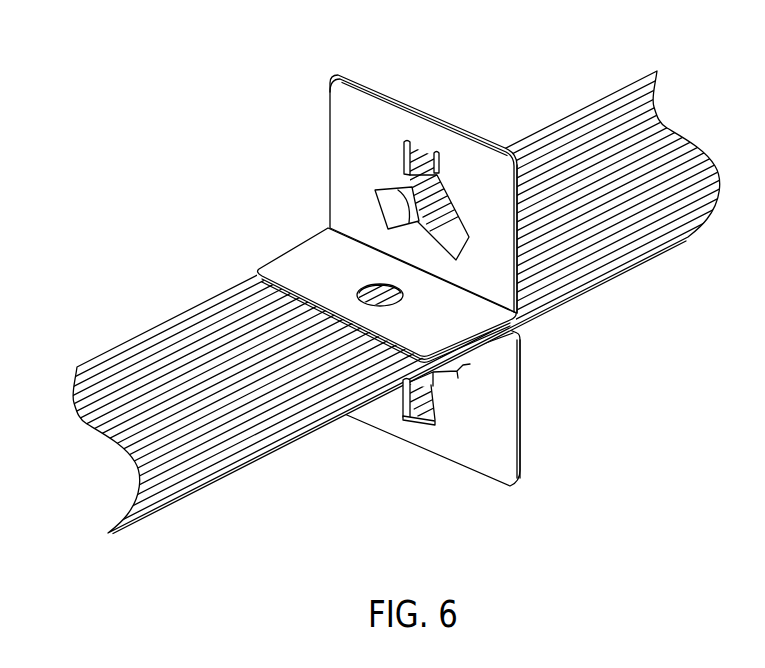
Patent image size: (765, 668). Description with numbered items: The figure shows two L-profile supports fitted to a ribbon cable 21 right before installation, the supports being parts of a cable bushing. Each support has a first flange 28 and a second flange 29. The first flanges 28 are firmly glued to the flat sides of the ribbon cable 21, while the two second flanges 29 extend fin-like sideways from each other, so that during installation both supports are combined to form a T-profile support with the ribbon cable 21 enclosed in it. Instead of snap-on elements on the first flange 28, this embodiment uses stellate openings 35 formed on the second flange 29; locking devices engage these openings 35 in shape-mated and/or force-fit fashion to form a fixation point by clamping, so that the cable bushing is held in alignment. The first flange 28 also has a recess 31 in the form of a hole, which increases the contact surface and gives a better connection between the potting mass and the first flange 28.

The ribbon cable 21 is at (133, 367).
The first flange 28 is at (287, 270).
The second flange 29 is at (498, 258).
The recess 31 is at (377, 300).
The opening 35 is at (387, 195).